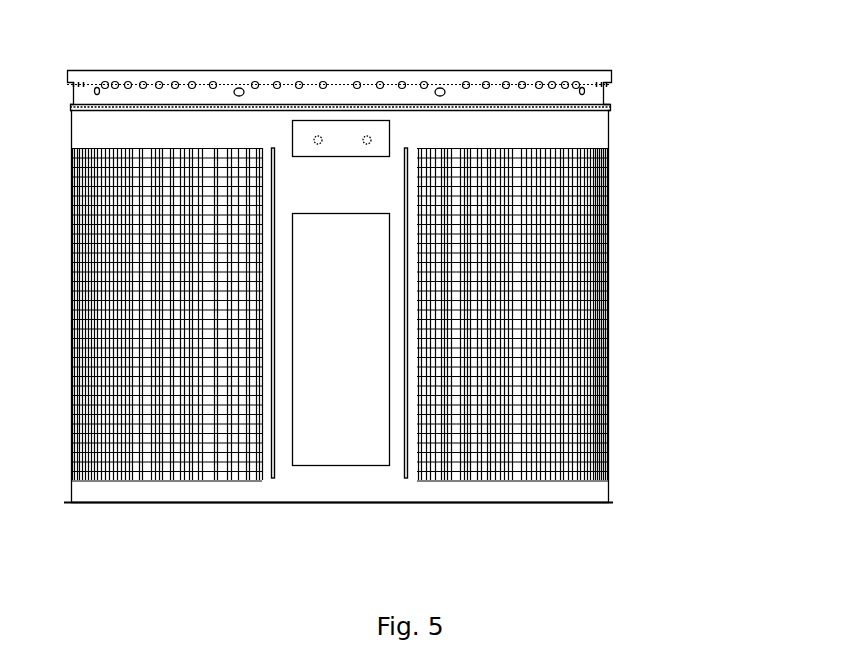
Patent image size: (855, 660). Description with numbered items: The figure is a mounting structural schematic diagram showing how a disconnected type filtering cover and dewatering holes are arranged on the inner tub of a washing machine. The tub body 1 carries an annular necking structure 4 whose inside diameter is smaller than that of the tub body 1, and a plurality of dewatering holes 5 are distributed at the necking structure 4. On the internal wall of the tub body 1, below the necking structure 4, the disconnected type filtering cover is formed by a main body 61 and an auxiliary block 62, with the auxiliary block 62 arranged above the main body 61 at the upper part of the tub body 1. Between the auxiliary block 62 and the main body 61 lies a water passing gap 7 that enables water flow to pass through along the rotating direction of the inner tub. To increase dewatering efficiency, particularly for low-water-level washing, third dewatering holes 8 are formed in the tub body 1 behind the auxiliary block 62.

The tub body 1 is at (592, 143).
The annular necking structure 4 is at (605, 90).
The dewatering holes 5 is at (578, 85).
The water passing gap 7 is at (359, 187).
The main body 61 is at (342, 407).
The auxiliary block 62 is at (303, 143).
The third dewatering holes 8 is at (367, 136).